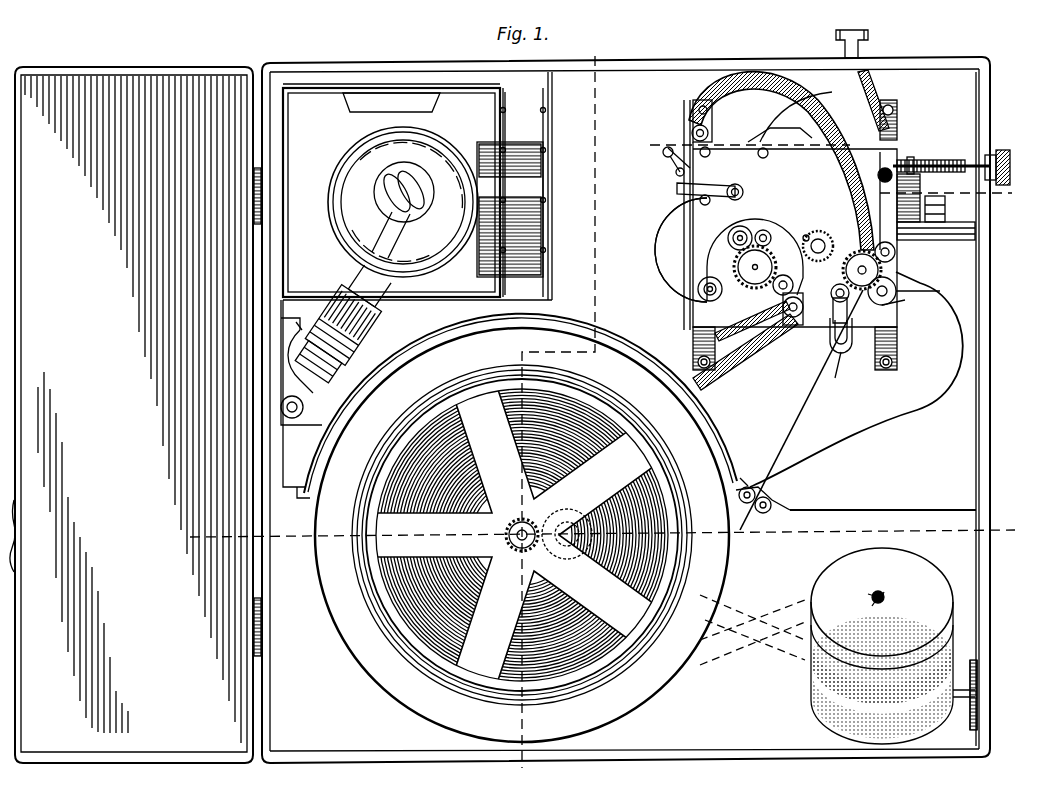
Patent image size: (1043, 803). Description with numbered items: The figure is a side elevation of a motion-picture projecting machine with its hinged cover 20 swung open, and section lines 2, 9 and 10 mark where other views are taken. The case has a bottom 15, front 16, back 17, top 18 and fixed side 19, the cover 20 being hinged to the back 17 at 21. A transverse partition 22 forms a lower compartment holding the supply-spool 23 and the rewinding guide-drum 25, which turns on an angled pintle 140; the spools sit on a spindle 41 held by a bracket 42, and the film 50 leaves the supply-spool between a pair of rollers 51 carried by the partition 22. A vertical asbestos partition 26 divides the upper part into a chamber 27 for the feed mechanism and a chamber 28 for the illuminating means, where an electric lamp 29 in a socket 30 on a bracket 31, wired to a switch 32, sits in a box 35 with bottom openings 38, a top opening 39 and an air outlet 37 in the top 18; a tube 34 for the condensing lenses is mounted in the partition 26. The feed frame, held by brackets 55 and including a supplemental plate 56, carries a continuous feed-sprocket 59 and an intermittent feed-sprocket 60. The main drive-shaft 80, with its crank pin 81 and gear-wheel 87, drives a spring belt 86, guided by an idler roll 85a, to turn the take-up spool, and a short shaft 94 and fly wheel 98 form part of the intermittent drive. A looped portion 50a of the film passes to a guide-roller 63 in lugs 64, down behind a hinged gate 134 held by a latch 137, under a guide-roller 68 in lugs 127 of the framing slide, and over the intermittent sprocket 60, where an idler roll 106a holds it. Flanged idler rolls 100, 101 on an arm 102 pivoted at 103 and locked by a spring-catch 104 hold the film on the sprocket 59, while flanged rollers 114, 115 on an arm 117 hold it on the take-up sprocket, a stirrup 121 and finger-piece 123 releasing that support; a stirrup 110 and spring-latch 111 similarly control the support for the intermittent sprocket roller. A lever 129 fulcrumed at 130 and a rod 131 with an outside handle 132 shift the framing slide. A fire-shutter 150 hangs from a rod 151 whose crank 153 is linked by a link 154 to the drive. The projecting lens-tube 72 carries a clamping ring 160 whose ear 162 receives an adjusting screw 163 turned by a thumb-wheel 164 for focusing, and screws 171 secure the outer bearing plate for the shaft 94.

The section line 2 is at (664, 151).
The section line 9 is at (599, 540).
The section line 10 is at (556, 411).
The bottom 15 is at (692, 753).
The front 16 is at (990, 437).
The back 17 is at (271, 585).
The top 18 is at (670, 66).
The fixed side 19 is at (655, 232).
The cover 20 is at (134, 415).
The hinge 21 is at (254, 200).
The transverse partition 22 is at (650, 335).
The supply-spool 23 is at (522, 535).
The rewinding guide-drum 25 is at (871, 646).
The vertical partition 26 is at (552, 188).
The chamber for the feed-mechanism 27 is at (593, 186).
The chamber for the illuminating means 28 is at (523, 192).
The electric lamp 29 is at (403, 202).
The socket 30 is at (337, 288).
The bracket 31 is at (282, 365).
The switch 32 is at (283, 322).
The tube for the condensing lenses 34 is at (510, 209).
The box 35 is at (285, 141).
The air outlet 37 is at (430, 86).
The openings 38 is at (515, 396).
The opening 39 is at (382, 92).
The spindle 41 is at (518, 540).
The bracket 42 is at (9, 536).
The film 50 is at (922, 412).
The curved arm 50a is at (832, 100).
The rollers 51 is at (750, 484).
The brackets 55 is at (897, 122).
The supplemental plate 56 is at (795, 256).
The continuous feed-sprocket 59 is at (846, 272).
The intermittent feed-sprocket 60 is at (752, 284).
The guide-roller 63 is at (713, 130).
The lugs 64 is at (691, 132).
The guide-roller 68 is at (710, 302).
The lens-tube 72 is at (921, 198).
The main drive-shaft 80 is at (831, 246).
The pin 81 is at (831, 235).
The idler roll 85a is at (752, 322).
The spring belt 86 is at (745, 378).
The gear-wheel 87 is at (808, 228).
The short shaft 94 is at (745, 228).
The fly wheel 98 is at (684, 214).
The flanged idler roll 100 is at (896, 300).
The flanged idler roll 101 is at (900, 240).
The arm 102 is at (878, 220).
The pivot 103 is at (878, 175).
The spring-catch 104 is at (896, 252).
The screw 106a is at (765, 301).
The stirrup 110 is at (797, 318).
The spring-latch 111 is at (791, 326).
The flanged roller 114 is at (894, 303).
The flanged roller 115 is at (827, 310).
The arm 117 is at (850, 300).
The stirrup 121 is at (830, 344).
The finger-piece 123 is at (841, 352).
The lugs 127 is at (703, 298).
The lever 129 is at (786, 130).
The fulcrum 130 is at (769, 155).
The rod 131 is at (876, 88).
The handle 132 is at (868, 38).
The gate 134 is at (711, 156).
The latch 137 is at (737, 188).
The pintle 140 is at (876, 592).
The fire-shutter 150 is at (678, 262).
The rod 151 is at (676, 174).
The crank 153 is at (672, 162).
The link 154 is at (665, 148).
The split clamping ring 160 is at (941, 206).
The screw-threaded ear 162 is at (911, 157).
The adjusting screw 163 is at (935, 160).
The thumb-wheel 164 is at (1004, 150).
The screws 171 is at (768, 234).